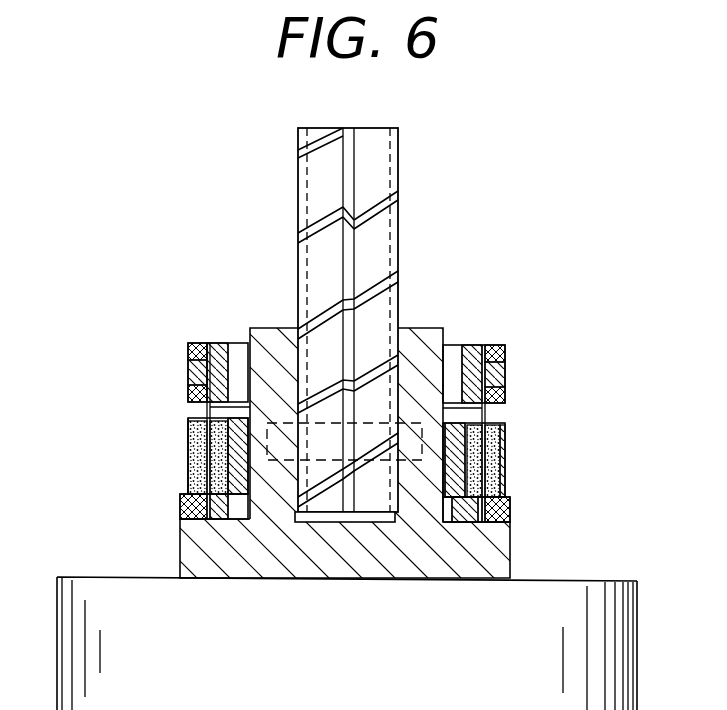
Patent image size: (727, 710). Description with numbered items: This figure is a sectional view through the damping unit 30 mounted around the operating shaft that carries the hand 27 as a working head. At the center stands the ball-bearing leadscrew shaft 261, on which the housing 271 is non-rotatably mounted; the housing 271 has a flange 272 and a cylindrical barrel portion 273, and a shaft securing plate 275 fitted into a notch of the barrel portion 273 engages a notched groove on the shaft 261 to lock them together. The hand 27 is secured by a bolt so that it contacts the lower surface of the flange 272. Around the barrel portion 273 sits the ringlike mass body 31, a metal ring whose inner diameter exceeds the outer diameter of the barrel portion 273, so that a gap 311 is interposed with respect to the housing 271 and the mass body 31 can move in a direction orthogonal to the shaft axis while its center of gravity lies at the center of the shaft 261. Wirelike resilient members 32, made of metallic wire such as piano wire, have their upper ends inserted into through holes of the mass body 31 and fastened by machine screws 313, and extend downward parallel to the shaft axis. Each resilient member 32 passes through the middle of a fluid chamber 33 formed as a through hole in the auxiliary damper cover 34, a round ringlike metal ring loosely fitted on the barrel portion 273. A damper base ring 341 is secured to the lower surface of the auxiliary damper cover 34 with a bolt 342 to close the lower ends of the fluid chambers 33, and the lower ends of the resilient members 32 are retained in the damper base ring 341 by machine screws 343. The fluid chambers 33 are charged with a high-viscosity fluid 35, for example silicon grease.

The hand 27 is at (88, 580).
The ball-bearing leadscrew shaft 261 is at (400, 222).
The housing 271 is at (268, 337).
The flange 272 is at (515, 552).
The cylindrical barrel portion 273 is at (420, 334).
The shaft securing plate 275 is at (412, 460).
The damping unit 30 is at (172, 443).
The ringlike mass body 31 is at (470, 347).
The gap 311 is at (238, 350).
The machine screws 313 is at (188, 388).
The resilient members 32 is at (505, 408).
The fluid chambers 33 is at (500, 453).
The auxiliary damper cover 34 is at (500, 477).
The fluid 35 is at (495, 418).
The damper base ring 341 is at (513, 503).
The bolt 342 is at (500, 525).
The machine screws 343 is at (180, 503).